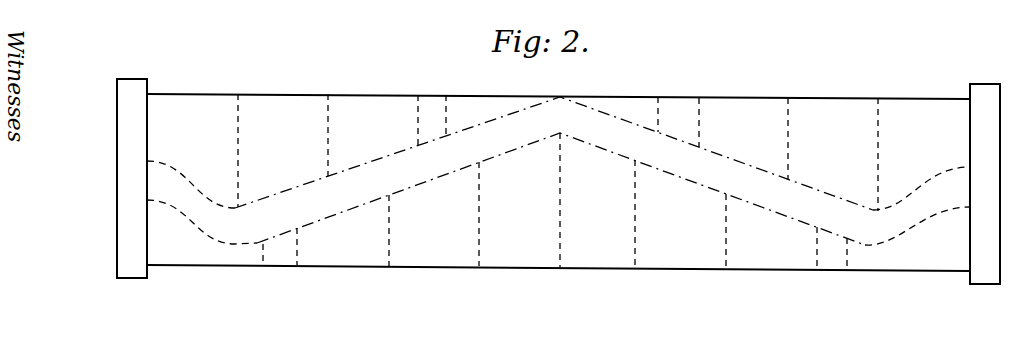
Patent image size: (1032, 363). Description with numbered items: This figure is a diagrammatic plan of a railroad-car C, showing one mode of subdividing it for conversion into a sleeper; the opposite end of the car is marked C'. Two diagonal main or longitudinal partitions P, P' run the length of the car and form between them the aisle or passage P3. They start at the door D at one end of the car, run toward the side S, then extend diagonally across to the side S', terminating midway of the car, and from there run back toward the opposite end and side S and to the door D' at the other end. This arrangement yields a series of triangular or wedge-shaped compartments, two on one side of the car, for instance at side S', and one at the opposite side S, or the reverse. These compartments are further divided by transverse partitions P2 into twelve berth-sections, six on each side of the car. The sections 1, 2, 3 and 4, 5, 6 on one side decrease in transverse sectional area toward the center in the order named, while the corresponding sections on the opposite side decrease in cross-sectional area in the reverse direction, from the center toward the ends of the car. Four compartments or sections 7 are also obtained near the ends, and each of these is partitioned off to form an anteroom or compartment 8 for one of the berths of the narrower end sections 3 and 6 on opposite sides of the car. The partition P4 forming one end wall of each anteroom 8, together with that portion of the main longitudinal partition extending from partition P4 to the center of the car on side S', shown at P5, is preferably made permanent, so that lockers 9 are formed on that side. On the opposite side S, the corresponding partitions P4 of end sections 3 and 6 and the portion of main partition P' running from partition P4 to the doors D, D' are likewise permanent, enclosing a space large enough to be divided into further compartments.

The berth-section 1 is at (357, 196).
The berth-section 2 is at (353, 207).
The narrower end berth-section 3 is at (357, 177).
The berth-section 4 is at (741, 197).
The berth-section 5 is at (756, 183).
The narrower end berth-section 6 is at (752, 179).
The compartment or section 7 is at (432, 104).
The anteroom or compartment 8 is at (552, 185).
The locker 9 is at (562, 113).
The car C is at (246, 175).
The car end C' is at (997, 184).
The door D is at (193, 202).
The door D' is at (923, 206).
The diagonal main or longitudinal partition P is at (554, 153).
The diagonal main or longitudinal partition P' is at (561, 189).
The transverse partition P2 is at (482, 181).
The aisle or passage P3 is at (558, 143).
The permanent partition P4 is at (551, 185).
The permanent portion of main longitudinal partition P5 is at (552, 115).
The side of car S is at (558, 265).
The side of car S' is at (558, 89).